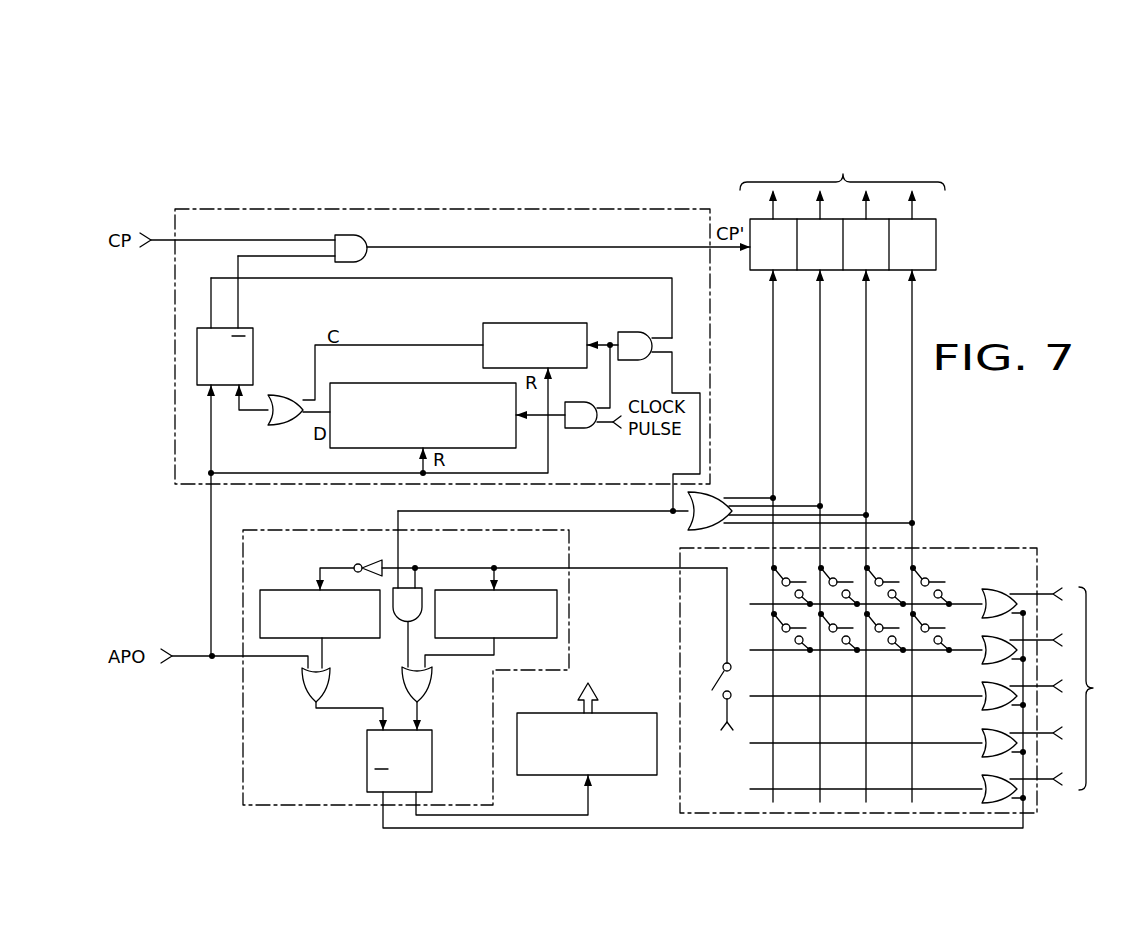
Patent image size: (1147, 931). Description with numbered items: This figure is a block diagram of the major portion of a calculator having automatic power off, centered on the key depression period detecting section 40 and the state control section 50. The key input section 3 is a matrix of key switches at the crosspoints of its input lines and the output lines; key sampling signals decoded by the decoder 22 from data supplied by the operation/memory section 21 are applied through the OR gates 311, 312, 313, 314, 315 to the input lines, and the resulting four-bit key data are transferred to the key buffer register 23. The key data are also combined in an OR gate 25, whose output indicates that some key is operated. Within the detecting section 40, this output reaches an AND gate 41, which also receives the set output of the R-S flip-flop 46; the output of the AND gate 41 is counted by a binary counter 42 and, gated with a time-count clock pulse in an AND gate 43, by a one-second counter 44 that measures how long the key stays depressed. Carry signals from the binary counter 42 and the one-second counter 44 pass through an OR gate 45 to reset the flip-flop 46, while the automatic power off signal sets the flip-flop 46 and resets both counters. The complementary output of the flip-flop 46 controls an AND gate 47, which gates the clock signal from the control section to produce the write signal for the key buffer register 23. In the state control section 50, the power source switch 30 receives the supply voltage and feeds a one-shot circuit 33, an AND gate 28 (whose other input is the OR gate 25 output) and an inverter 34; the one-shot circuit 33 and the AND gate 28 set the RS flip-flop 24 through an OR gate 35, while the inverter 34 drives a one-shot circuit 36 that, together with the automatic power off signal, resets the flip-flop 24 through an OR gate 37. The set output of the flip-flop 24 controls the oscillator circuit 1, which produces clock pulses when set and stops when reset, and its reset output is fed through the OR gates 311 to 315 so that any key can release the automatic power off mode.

The oscillator circuit 1 is at (640, 720).
The key input section 3 is at (994, 548).
The operation/memory section 21 is at (859, 166).
The decoder 22 is at (1100, 688).
The key buffer register 23 is at (938, 246).
The RS type flip-flop 24 is at (434, 768).
The OR gate 25 is at (719, 497).
The AND gate 28 is at (419, 582).
The power source switch 30 is at (723, 691).
The one-shot circuit 33 is at (552, 616).
The inverter 34 is at (370, 563).
The OR gate 35 is at (420, 688).
The one-shot circuit 36 is at (373, 637).
The OR gate 37 is at (310, 688).
The key depression period detecting section 40 is at (607, 207).
The AND gate 41 is at (632, 334).
The binary counter 42 is at (572, 330).
The AND gate 43 is at (584, 429).
The one-second counter 44 is at (345, 384).
The OR gate 45 is at (291, 399).
The R-S flip-flop 46 is at (253, 335).
The AND gate 47 is at (363, 246).
The state control section 50 is at (571, 552).
The OR gate 311 is at (1000, 600).
The OR gate 312 is at (995, 645).
The OR gate 313 is at (995, 690).
The OR gate 314 is at (995, 734).
The OR gate 315 is at (995, 780).